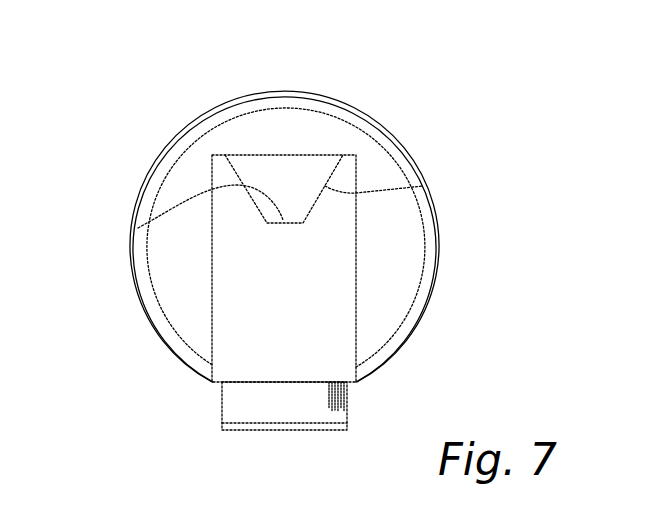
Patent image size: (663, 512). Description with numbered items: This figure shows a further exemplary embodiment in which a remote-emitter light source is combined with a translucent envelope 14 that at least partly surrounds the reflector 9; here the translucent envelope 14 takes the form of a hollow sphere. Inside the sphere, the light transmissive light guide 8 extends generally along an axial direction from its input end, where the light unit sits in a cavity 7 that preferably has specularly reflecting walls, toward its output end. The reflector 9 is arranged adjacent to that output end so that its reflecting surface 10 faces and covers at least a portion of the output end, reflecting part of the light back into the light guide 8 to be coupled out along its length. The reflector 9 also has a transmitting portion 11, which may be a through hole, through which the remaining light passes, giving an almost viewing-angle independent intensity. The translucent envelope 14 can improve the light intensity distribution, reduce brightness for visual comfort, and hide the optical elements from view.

The cavity 7 is at (332, 395).
The light guide 8 is at (372, 292).
The reflector 9 is at (294, 182).
The reflecting surface 10 is at (423, 186).
The transmitting portion 11 is at (138, 228).
The translucent envelope 14 is at (378, 123).